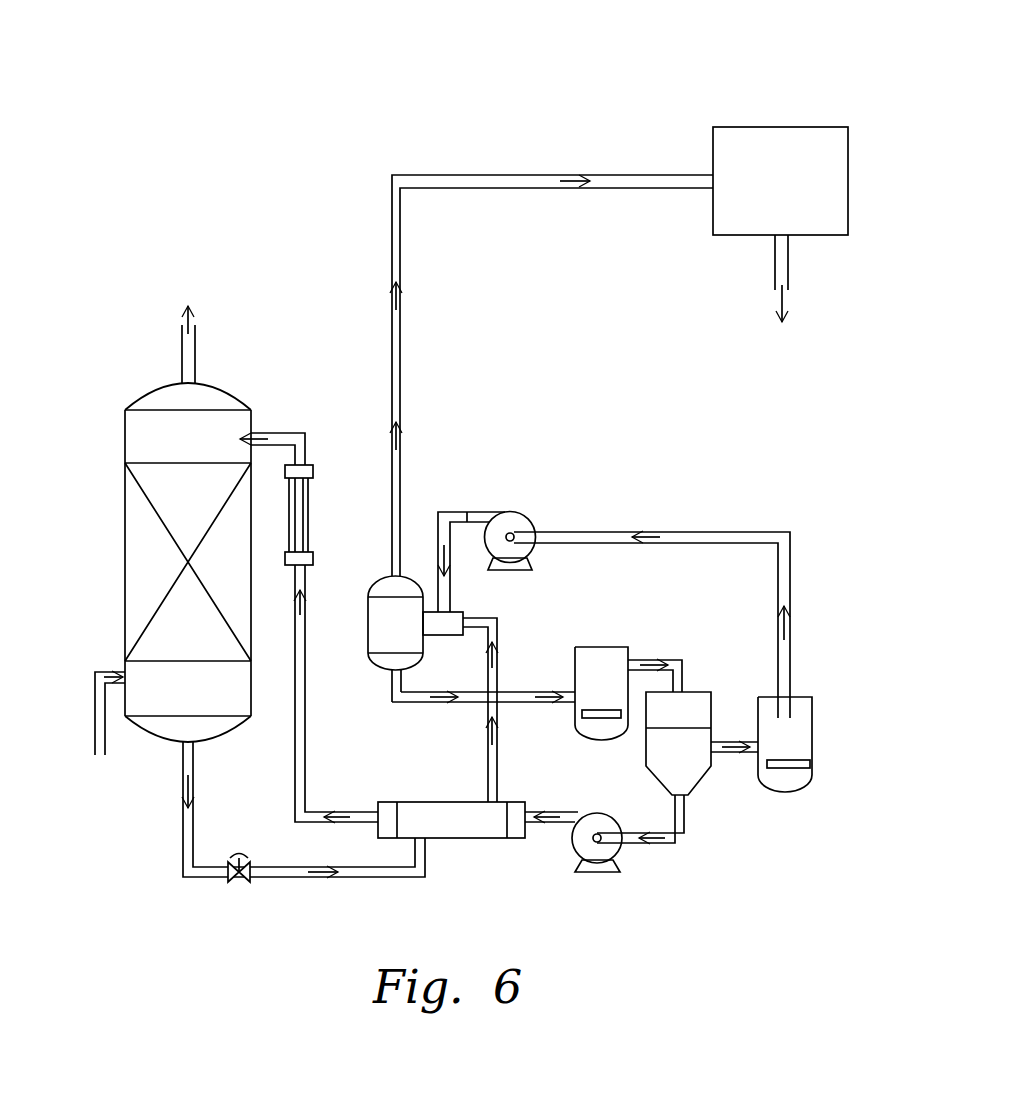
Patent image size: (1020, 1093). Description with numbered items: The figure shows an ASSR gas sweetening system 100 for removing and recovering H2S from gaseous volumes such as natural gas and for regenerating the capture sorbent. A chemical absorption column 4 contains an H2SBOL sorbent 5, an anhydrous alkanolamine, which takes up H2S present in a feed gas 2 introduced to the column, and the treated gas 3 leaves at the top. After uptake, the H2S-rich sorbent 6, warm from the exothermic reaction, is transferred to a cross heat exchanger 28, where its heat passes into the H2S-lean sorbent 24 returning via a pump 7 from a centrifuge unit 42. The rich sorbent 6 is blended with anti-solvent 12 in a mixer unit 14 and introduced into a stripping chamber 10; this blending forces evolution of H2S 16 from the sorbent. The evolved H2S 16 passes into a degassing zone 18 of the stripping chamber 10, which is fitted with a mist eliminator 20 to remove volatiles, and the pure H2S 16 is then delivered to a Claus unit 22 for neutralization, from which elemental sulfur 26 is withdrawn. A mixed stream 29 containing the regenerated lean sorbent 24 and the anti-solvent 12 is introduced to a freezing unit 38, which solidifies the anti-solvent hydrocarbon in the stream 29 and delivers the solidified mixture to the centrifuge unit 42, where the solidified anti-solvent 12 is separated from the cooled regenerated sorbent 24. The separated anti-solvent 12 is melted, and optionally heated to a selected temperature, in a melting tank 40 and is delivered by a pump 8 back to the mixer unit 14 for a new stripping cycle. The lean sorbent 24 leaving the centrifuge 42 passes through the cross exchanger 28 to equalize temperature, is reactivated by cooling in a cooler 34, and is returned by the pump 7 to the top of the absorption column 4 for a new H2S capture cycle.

The ASSR gas sweetening system 100 is at (298, 102).
The chemical absorption column 4 is at (144, 362).
The H2SBOL sorbent 5 is at (188, 584).
The treated gas outlet 3 is at (196, 322).
The feed gas 2 is at (108, 672).
The H2S-rich sorbent 6 is at (192, 800).
The H2S-lean sorbent 24 is at (258, 440).
The cooler 34 is at (313, 505).
The evolved H2S 16 is at (578, 183).
The Claus unit 22 is at (780, 181).
The elemental sulfur outlet 26 is at (792, 281).
The stripping chamber 10 is at (413, 565).
The mist eliminator 20 is at (372, 599).
The degassing zone 18 is at (394, 628).
The mixer unit 14 is at (433, 627).
The pump 8 is at (512, 512).
The anti-solvent 12 is at (448, 560).
The mixed stream 29 is at (440, 703).
The freezing unit 38 is at (601, 693).
The centrifuge unit 42 is at (678, 743).
The melting tank 40 is at (785, 744).
The cross heat exchanger 28 is at (451, 820).
The pump 7 is at (573, 845).